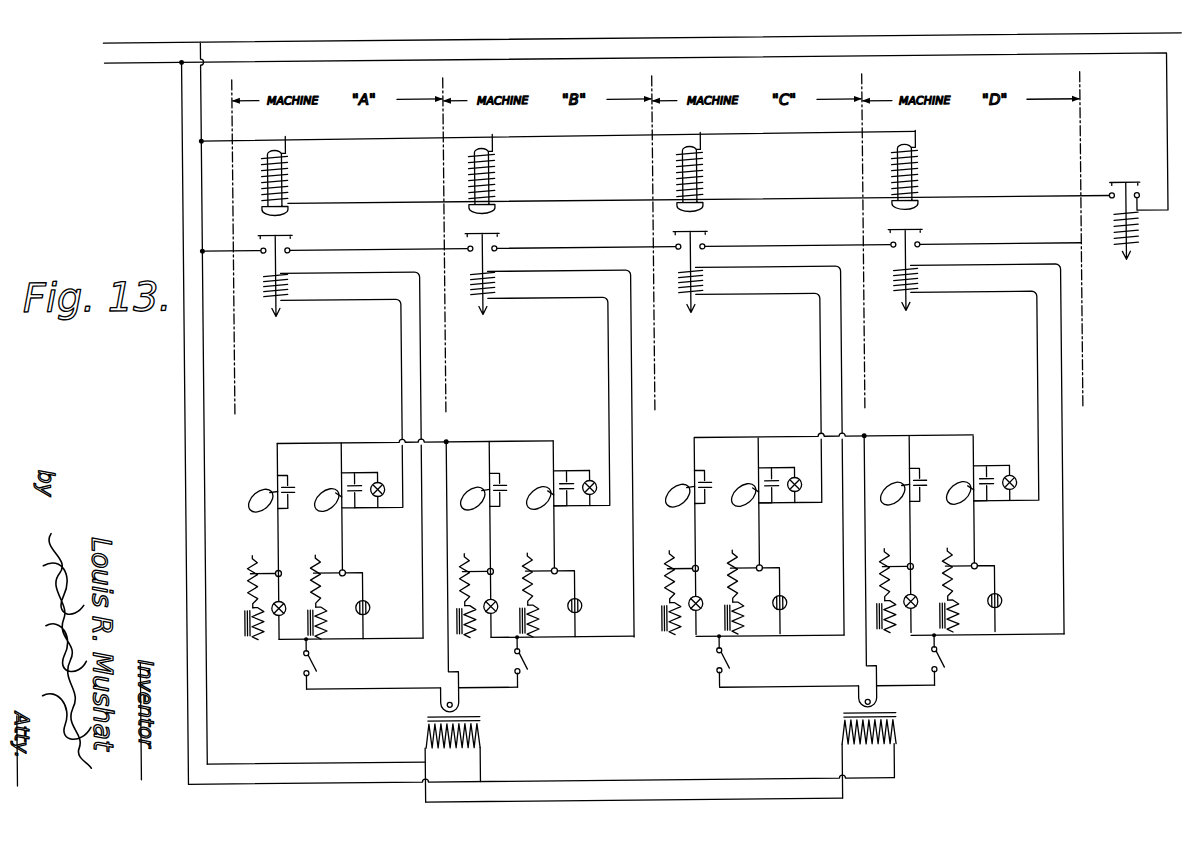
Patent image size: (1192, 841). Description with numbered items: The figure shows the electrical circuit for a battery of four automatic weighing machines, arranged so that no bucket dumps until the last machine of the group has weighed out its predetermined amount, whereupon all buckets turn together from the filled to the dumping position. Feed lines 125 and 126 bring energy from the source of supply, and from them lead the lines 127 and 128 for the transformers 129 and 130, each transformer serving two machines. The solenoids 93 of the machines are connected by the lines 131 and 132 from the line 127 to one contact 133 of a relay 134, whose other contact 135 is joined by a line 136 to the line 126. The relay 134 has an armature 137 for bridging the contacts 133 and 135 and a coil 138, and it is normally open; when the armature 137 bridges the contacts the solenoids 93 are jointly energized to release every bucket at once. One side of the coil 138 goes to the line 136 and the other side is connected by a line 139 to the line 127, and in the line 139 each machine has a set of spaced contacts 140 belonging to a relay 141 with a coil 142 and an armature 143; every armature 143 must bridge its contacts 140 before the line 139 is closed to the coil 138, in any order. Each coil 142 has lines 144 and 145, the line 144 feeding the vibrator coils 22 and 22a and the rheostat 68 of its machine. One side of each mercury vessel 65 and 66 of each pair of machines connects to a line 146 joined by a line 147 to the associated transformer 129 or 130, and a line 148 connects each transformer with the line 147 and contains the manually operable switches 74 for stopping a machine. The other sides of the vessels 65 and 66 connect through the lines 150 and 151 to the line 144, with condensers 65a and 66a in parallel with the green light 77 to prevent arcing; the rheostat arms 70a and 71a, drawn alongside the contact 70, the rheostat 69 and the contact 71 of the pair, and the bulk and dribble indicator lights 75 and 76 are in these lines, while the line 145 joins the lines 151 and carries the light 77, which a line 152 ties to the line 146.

The feed line 125 is at (105, 38).
The feed line 126 is at (106, 62).
The solenoid 93 is at (292, 162).
The line 131 is at (591, 137).
The line 132 is at (624, 198).
The armature 143 is at (270, 235).
The spaced contacts 140 is at (268, 251).
The line 139 is at (800, 246).
The contact 133 is at (1112, 199).
The contact 135 is at (1137, 202).
The line 136 is at (1170, 108).
The armature 137 is at (1143, 186).
The coil 138 is at (1111, 234).
The relay 134 is at (1113, 268).
The coil 142 is at (266, 295).
The relay 141 is at (276, 317).
The line 144 is at (420, 332).
The line 145 is at (401, 361).
The line 146 is at (480, 439).
The line 147 is at (445, 657).
The line 148 is at (372, 686).
The line 152 is at (353, 467).
The condenser 65a is at (277, 478).
The mercury vessel 65 is at (569, 493).
The mercury vessel 66 is at (639, 489).
The condenser 66a is at (341, 510).
The green light 77 is at (378, 480).
The line 150 is at (270, 526).
The line 151 is at (381, 546).
The rheostat arm 70a is at (263, 566).
The contact 70 is at (281, 566).
The resistor 69 is at (634, 567).
The rheostat arm 71a is at (331, 566).
The contact 71 is at (346, 566).
The rheostat 68 is at (253, 579).
The vibrator coil 22 is at (250, 641).
The vibrator coil 22a is at (325, 618).
The indicator light 75 is at (277, 612).
The indicator light 76 is at (361, 612).
The manually operable switch 74 is at (298, 662).
The line 127 is at (287, 753).
The line 128 is at (276, 782).
The transformer 129 is at (421, 738).
The transformer 130 is at (836, 741).